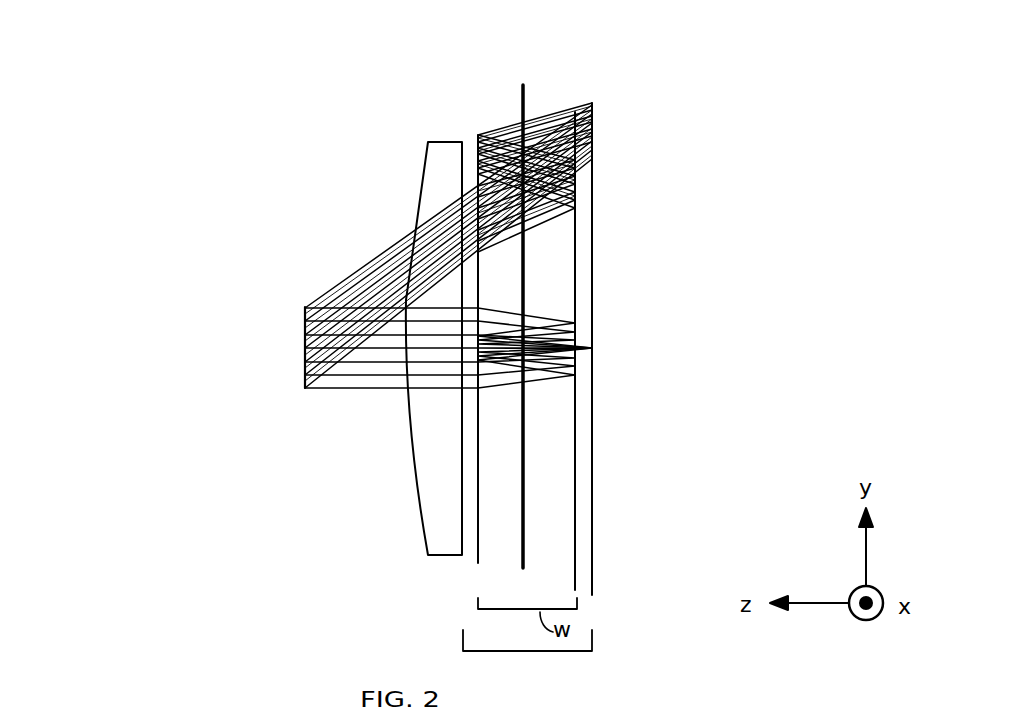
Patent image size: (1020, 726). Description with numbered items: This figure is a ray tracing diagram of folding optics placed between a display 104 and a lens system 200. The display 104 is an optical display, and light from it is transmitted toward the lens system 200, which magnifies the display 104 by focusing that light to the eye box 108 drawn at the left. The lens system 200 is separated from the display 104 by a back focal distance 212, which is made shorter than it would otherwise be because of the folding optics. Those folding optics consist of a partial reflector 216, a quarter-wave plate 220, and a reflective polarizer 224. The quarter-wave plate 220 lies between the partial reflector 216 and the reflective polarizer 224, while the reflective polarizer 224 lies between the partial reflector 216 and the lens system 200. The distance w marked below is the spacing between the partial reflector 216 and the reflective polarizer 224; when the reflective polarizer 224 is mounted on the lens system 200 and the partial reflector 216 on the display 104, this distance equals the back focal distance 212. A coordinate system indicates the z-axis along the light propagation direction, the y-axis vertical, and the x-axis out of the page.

The lens system 200 is at (133, 84).
The quarter-wave plate 220 is at (522, 85).
The reflective polarizer 224 is at (478, 135).
The partial reflector 216 is at (574, 133).
The display 104 is at (593, 312).
The eye box 108 is at (304, 362).
The back focal distance 212 is at (497, 653).